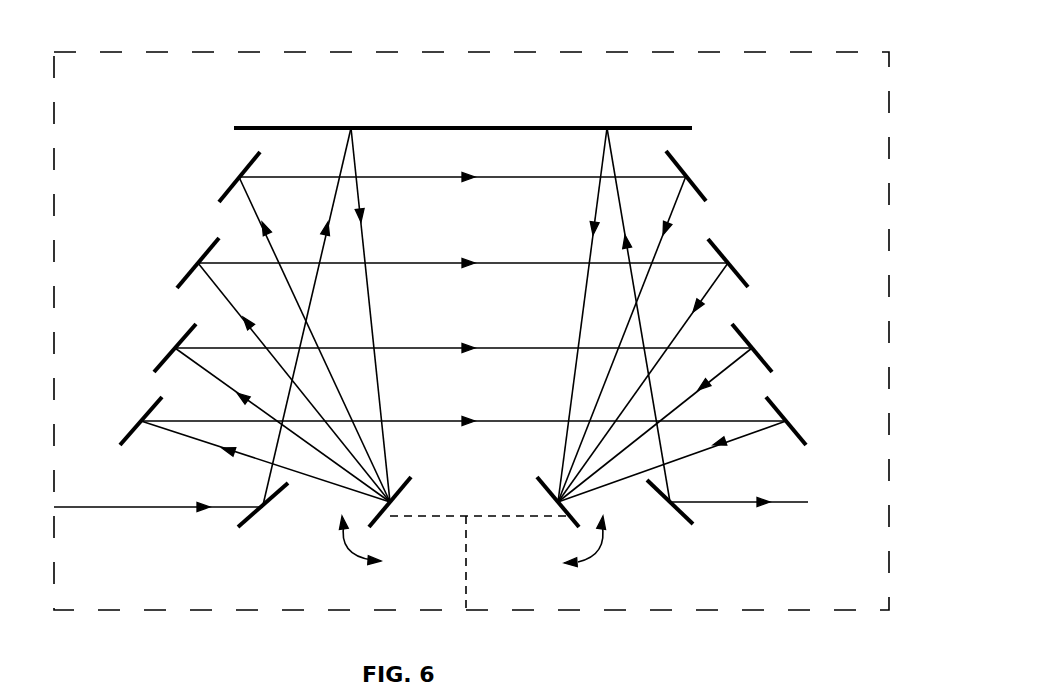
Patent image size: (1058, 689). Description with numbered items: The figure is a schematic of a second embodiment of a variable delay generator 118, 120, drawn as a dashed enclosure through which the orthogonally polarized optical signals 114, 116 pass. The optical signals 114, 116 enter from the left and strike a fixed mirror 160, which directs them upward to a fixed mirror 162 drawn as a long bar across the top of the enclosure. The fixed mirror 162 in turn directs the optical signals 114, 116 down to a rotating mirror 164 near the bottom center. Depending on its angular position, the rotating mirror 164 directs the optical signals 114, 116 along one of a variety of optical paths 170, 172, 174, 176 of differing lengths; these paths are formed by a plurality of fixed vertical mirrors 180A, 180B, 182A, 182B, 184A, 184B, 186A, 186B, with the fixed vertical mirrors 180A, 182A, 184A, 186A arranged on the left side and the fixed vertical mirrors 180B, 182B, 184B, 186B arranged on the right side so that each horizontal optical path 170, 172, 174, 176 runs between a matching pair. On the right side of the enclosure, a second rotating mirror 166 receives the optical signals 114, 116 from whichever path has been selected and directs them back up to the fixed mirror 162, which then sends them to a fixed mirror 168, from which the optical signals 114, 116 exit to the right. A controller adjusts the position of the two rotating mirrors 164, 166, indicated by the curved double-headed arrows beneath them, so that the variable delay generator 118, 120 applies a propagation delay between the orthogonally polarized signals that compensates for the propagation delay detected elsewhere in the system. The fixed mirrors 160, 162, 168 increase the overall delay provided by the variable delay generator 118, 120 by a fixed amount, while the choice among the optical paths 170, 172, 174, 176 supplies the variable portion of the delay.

The optical signal 114 is at (90, 508).
The optical signal 116 is at (158, 507).
The variable delay generator 118 is at (645, 50).
The variable delay generator 120 is at (471, 331).
The fixed mirror 160 is at (258, 513).
The fixed mirror 162 is at (505, 128).
The rotating mirror 164 is at (405, 497).
The rotating mirror 166 is at (545, 500).
The fixed mirror 168 is at (677, 513).
The optical path 170 is at (507, 420).
The optical path 172 is at (507, 347).
The optical path 174 is at (507, 262).
The optical path 176 is at (507, 177).
The fixed vertical mirror 180A is at (138, 425).
The fixed vertical mirror 180B is at (796, 428).
The fixed vertical mirror 182A is at (168, 356).
The fixed vertical mirror 182B is at (762, 355).
The fixed vertical mirror 184A is at (187, 276).
The fixed vertical mirror 184B is at (737, 270).
The fixed vertical mirror 186A is at (232, 182).
The fixed vertical mirror 186B is at (697, 189).